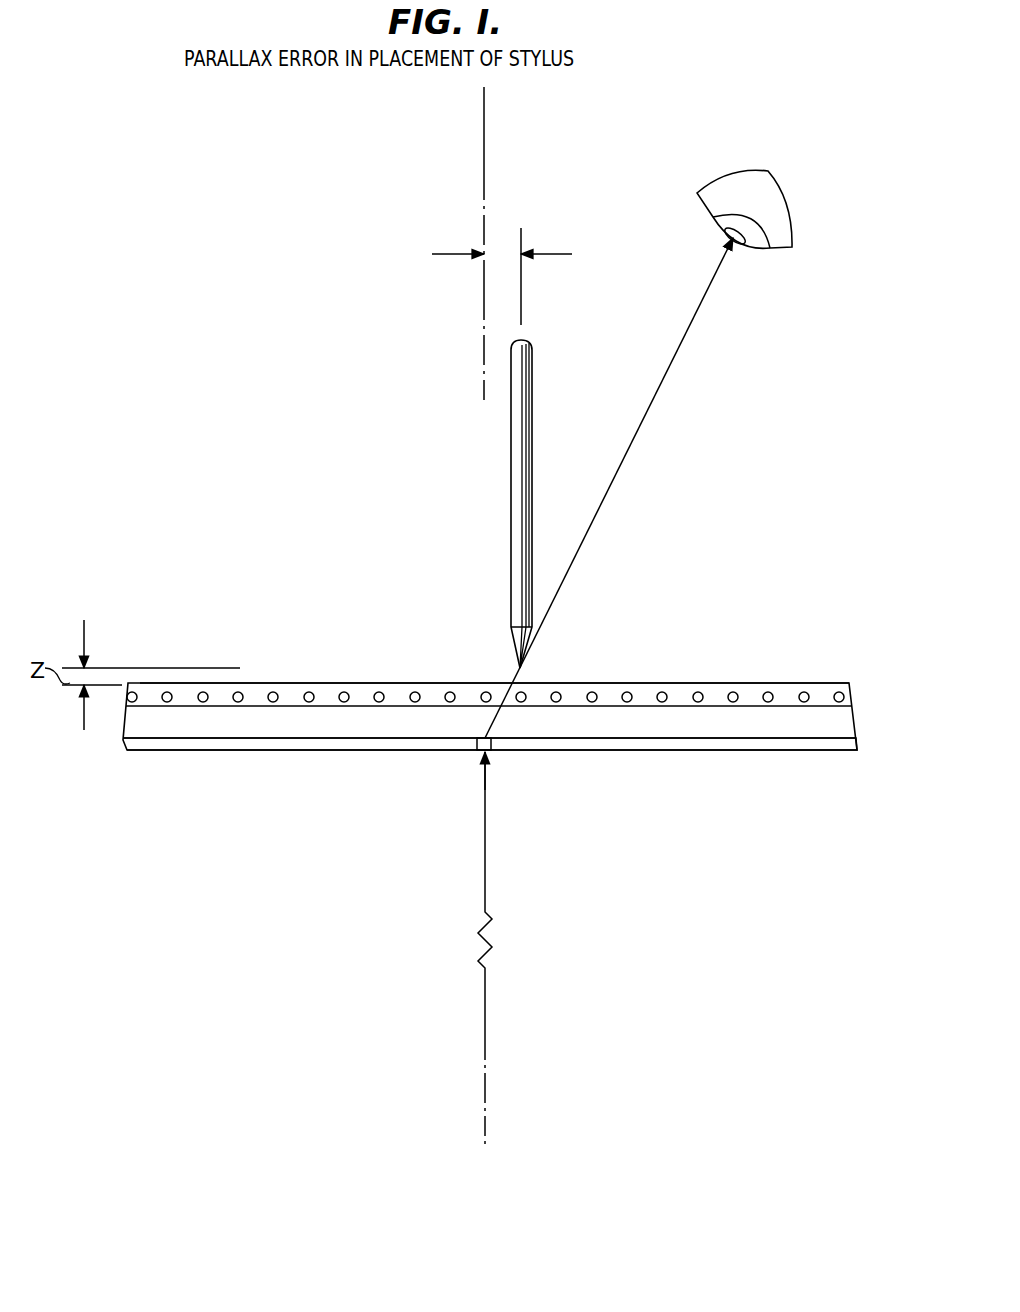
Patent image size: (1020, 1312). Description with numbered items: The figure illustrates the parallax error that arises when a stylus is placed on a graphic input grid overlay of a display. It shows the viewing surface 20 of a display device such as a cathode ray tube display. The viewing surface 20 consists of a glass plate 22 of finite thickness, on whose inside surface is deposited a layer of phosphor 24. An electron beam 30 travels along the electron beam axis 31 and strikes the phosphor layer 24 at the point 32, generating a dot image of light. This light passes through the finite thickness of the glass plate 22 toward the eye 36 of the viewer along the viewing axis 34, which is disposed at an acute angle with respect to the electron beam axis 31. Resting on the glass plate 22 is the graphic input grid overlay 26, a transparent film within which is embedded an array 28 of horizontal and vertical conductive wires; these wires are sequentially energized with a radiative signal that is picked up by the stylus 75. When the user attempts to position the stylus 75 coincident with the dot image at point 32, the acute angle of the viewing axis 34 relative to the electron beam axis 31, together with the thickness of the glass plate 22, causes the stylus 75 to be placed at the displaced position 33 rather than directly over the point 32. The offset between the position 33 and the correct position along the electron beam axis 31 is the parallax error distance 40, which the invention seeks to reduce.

The viewing surface 20 is at (305, 578).
The glass plate 22 is at (833, 730).
The layer of phosphor 24 is at (810, 743).
The graphic input grid overlay 26 is at (817, 690).
The array of conductive wires 28 is at (769, 691).
The electron beam 30 is at (485, 895).
The electron beam axis 31 is at (485, 128).
The point (dot image) 32 is at (481, 758).
The displaced stylus position 33 is at (523, 230).
The viewing axis 34 is at (604, 515).
The eye of the viewer 36 is at (775, 216).
The parallax error distance 40 is at (475, 280).
The stylus 75 is at (512, 541).